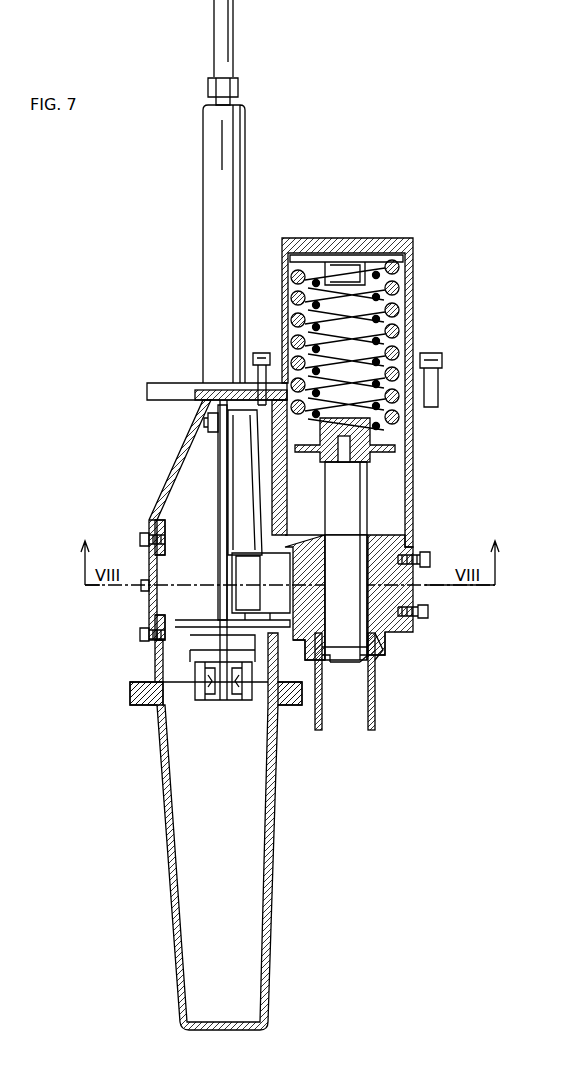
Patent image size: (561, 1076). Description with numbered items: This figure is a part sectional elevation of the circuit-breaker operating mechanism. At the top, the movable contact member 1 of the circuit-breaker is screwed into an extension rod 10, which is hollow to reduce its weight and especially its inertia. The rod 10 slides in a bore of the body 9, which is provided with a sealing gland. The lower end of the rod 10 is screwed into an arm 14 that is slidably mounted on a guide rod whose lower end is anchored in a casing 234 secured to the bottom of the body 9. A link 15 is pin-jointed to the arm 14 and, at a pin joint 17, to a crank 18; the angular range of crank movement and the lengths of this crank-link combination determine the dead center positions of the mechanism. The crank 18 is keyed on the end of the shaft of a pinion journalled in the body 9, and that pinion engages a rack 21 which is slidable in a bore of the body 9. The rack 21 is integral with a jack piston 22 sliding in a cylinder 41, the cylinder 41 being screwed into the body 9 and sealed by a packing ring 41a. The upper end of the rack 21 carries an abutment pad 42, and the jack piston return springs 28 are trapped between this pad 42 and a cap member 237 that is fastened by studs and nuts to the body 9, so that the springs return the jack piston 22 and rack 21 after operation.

The movable contact member 1 is at (237, 52).
The extension rod 10 is at (242, 208).
The cap member 237 is at (393, 250).
The jack piston return springs 28 is at (392, 431).
The abutment pad 42 is at (373, 462).
The rack 21 is at (358, 520).
The cylinder 41 is at (376, 700).
The packing ring 41a is at (380, 658).
The body 9 is at (385, 636).
The jack piston 22 is at (376, 668).
The casing 234 is at (163, 777).
The pin joint 17 is at (210, 423).
The crank 18 is at (243, 461).
The link 15 is at (225, 492).
The arm 14 is at (205, 700).